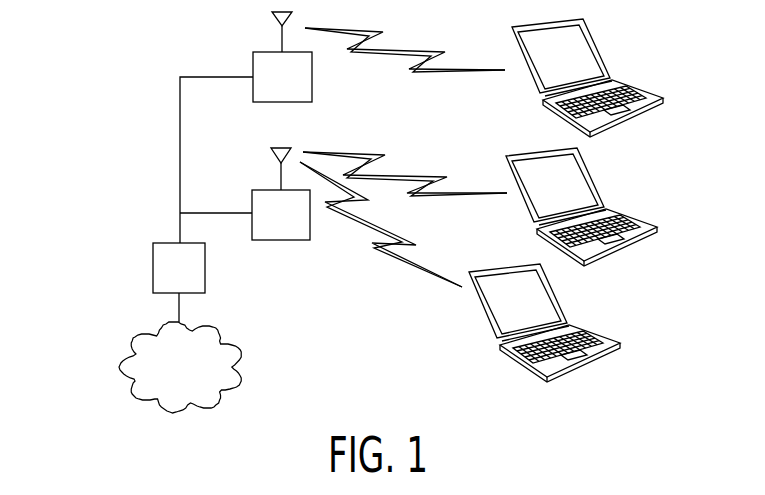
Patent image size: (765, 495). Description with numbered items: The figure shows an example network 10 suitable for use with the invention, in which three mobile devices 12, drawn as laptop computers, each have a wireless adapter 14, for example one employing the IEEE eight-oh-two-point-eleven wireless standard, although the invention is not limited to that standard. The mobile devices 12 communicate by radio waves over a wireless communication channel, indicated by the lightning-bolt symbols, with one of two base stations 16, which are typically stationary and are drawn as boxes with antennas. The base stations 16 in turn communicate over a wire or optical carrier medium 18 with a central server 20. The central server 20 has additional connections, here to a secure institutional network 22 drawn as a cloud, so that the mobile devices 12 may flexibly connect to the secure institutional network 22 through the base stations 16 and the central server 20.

The network 10 is at (125, 73).
The mobile device 12 is at (594, 46).
The wireless adapter 14 is at (545, 106).
The base station 16 is at (307, 90).
The wire or optical carrier medium 18 is at (179, 161).
The central server 20 is at (158, 267).
The secure institutional network 22 is at (148, 347).